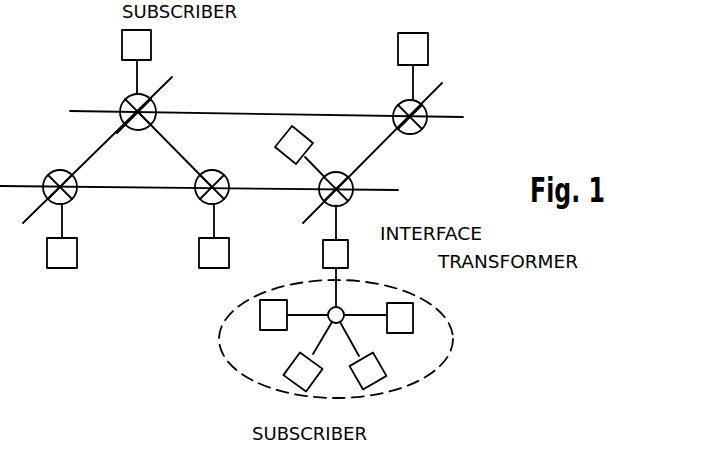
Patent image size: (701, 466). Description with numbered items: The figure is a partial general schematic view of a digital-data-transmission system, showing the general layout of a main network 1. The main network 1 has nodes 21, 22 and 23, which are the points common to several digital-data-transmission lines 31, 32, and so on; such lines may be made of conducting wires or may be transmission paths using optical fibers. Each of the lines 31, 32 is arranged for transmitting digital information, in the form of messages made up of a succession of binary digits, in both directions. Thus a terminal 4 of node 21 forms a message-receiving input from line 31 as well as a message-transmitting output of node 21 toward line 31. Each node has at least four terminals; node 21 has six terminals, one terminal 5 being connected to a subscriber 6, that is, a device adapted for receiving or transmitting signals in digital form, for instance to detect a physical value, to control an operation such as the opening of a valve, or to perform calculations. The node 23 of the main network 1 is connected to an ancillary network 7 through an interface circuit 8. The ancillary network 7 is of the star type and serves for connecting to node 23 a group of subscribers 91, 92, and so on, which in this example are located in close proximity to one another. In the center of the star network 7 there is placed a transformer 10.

The main network 1 is at (113, 248).
The node 21 is at (153, 102).
The node 22 is at (216, 170).
The node 23 is at (351, 198).
The digital-data-transmission line 31 is at (105, 143).
The digital-data-transmission line 32 is at (170, 145).
The terminal 4 is at (125, 125).
The terminal 5 is at (131, 94).
The subscriber 6 is at (130, 43).
The ancillary network 7 is at (217, 338).
The interface circuit 8 is at (349, 253).
The subscriber 91 is at (272, 312).
The subscriber 92 is at (297, 377).
The transformer 10 is at (343, 308).